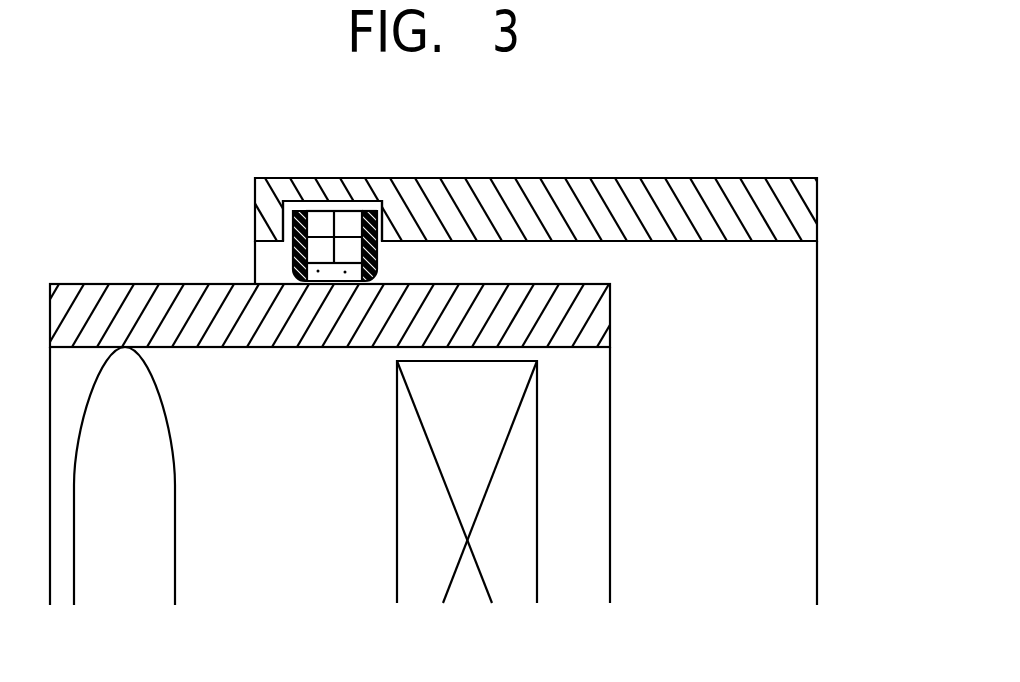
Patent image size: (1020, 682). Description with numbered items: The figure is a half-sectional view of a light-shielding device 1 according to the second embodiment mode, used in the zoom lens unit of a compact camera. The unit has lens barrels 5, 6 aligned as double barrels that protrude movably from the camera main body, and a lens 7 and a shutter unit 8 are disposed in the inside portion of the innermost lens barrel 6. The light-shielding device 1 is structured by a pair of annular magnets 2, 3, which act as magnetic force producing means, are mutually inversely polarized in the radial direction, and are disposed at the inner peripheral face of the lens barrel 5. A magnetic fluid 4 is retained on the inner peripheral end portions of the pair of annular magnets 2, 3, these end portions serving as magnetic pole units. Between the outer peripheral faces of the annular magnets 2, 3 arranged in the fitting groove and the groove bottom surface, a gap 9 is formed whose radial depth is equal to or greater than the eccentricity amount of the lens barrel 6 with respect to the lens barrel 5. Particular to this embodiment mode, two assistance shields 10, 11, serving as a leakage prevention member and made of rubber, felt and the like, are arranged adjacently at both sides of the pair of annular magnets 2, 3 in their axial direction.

The light-shielding device 1 is at (348, 181).
The annular magnet 2 is at (313, 200).
The annular magnet 3 is at (374, 205).
The magnetic fluid 4 is at (347, 274).
The lens barrel 5 is at (501, 186).
The lens barrel 6 is at (128, 283).
The lens 7 is at (153, 457).
The shutter unit 8 is at (408, 520).
The gap 9 is at (333, 202).
The assistance shield 10 is at (300, 228).
The assistance shield 11 is at (374, 229).